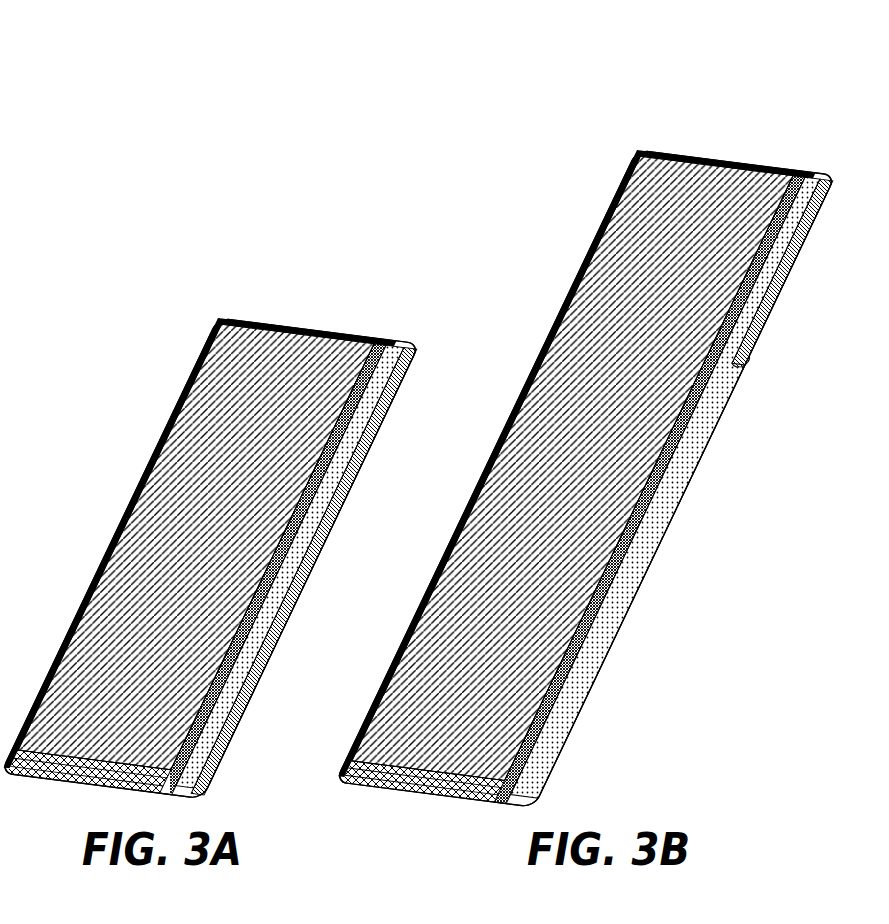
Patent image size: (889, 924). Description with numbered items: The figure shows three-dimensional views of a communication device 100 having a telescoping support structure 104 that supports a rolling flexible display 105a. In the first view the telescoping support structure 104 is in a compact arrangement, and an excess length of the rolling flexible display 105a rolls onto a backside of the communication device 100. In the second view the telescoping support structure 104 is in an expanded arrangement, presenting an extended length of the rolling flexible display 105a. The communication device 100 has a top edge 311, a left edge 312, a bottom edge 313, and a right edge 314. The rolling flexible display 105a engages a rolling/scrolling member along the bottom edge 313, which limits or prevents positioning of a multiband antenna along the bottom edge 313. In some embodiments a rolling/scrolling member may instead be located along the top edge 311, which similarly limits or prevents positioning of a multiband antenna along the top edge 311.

In FIG. 3A, the communication device 100 is at (176, 343).
In FIG. 3B, the communication device 100 is at (556, 238).
In FIG. 3A, the telescoping support structure 104 is at (250, 645).
In FIG. 3B, the telescoping support structure 104 is at (598, 667).
In FIG. 3A, the rolling flexible display 105a is at (117, 617).
In FIG. 3B, the rolling flexible display 105a is at (493, 517).
In FIG. 3A, the top edge 311 is at (300, 328).
In FIG. 3B, the top edge 311 is at (727, 173).
In FIG. 3A, the left edge 312 is at (72, 630).
In FIG. 3B, the left edge 312 is at (430, 578).
In FIG. 3A, the bottom edge 313 is at (77, 777).
In FIG. 3B, the bottom edge 313 is at (385, 787).
In FIG. 3A, the right edge 314 is at (225, 717).
In FIG. 3B, the right edge 314 is at (580, 660).